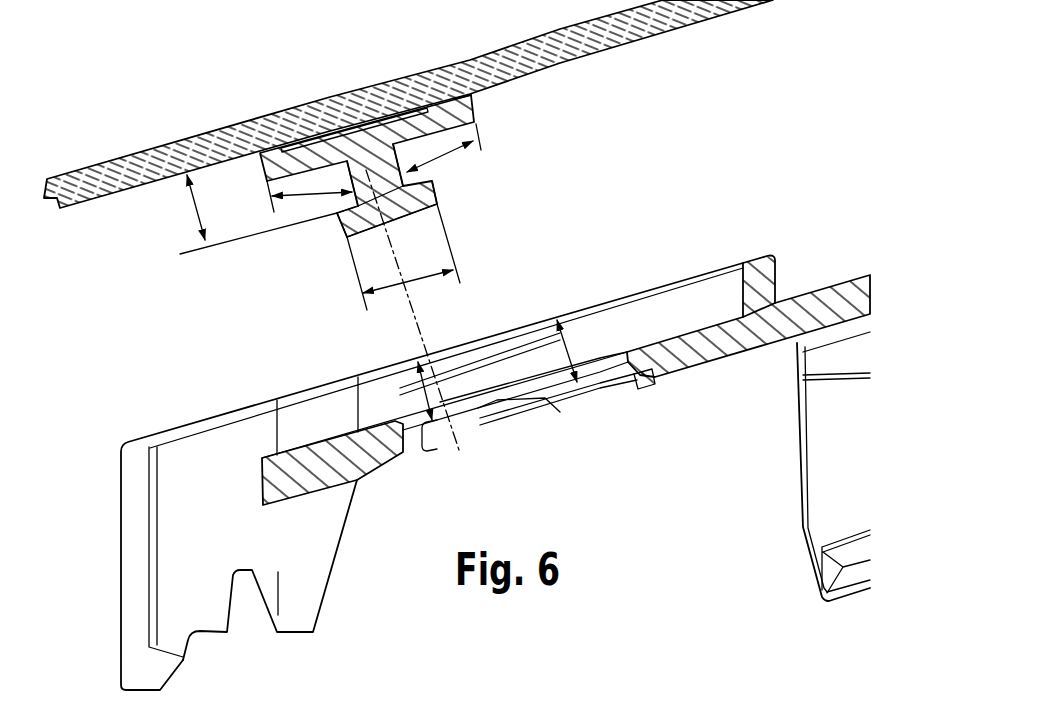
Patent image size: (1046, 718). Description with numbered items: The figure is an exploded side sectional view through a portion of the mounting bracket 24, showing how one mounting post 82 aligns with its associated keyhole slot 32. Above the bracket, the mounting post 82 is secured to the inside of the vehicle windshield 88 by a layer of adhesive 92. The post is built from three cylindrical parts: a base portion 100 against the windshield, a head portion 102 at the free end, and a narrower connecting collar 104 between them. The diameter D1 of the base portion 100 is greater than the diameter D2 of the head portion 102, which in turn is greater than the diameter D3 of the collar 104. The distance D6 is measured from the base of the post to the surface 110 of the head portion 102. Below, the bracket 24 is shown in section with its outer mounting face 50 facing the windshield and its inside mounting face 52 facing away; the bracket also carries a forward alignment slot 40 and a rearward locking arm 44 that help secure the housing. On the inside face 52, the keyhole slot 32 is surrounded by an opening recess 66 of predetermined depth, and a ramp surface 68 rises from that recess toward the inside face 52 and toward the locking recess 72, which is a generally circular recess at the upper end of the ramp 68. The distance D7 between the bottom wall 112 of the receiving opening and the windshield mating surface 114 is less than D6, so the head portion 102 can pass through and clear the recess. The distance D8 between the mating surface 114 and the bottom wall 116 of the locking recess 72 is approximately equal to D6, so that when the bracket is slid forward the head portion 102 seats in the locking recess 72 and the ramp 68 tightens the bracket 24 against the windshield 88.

The mounting bracket 24 is at (118, 488).
The keyhole slot 32 is at (432, 458).
The forward alignment slot 40 is at (247, 640).
The rearward locking arm 44 is at (803, 527).
The outer mounting face 50 is at (663, 340).
The inside mounting face 52 is at (760, 352).
The opening recess 66 is at (496, 415).
The ramp surface 68 is at (520, 405).
The locking recess 72 is at (584, 407).
The mounting post 82 is at (455, 99).
The windshield 88 is at (592, 50).
The adhesive 92 is at (372, 115).
The base portion 100 is at (476, 104).
The head portion 102 is at (440, 201).
The connecting collar 104 is at (476, 162).
The surface of the head portion 110 is at (342, 210).
The bottom wall of the opening 112 is at (470, 410).
The windshield mating surface 114 is at (335, 385).
The bottom wall of the locking recess 116 is at (645, 385).
The diameter of the base portion D1 is at (309, 188).
The diameter of the head portion D2 is at (403, 257).
The diameter of the collar portion D3 is at (444, 154).
The distance from the base of the mounting post to the surface of the head portion D6 is at (258, 214).
The distance between the bottom wall of the opening and the windshield mating surfac D7 is at (412, 391).
The distance between the mating surface and the bottom wall of the locking recess D8 is at (557, 351).